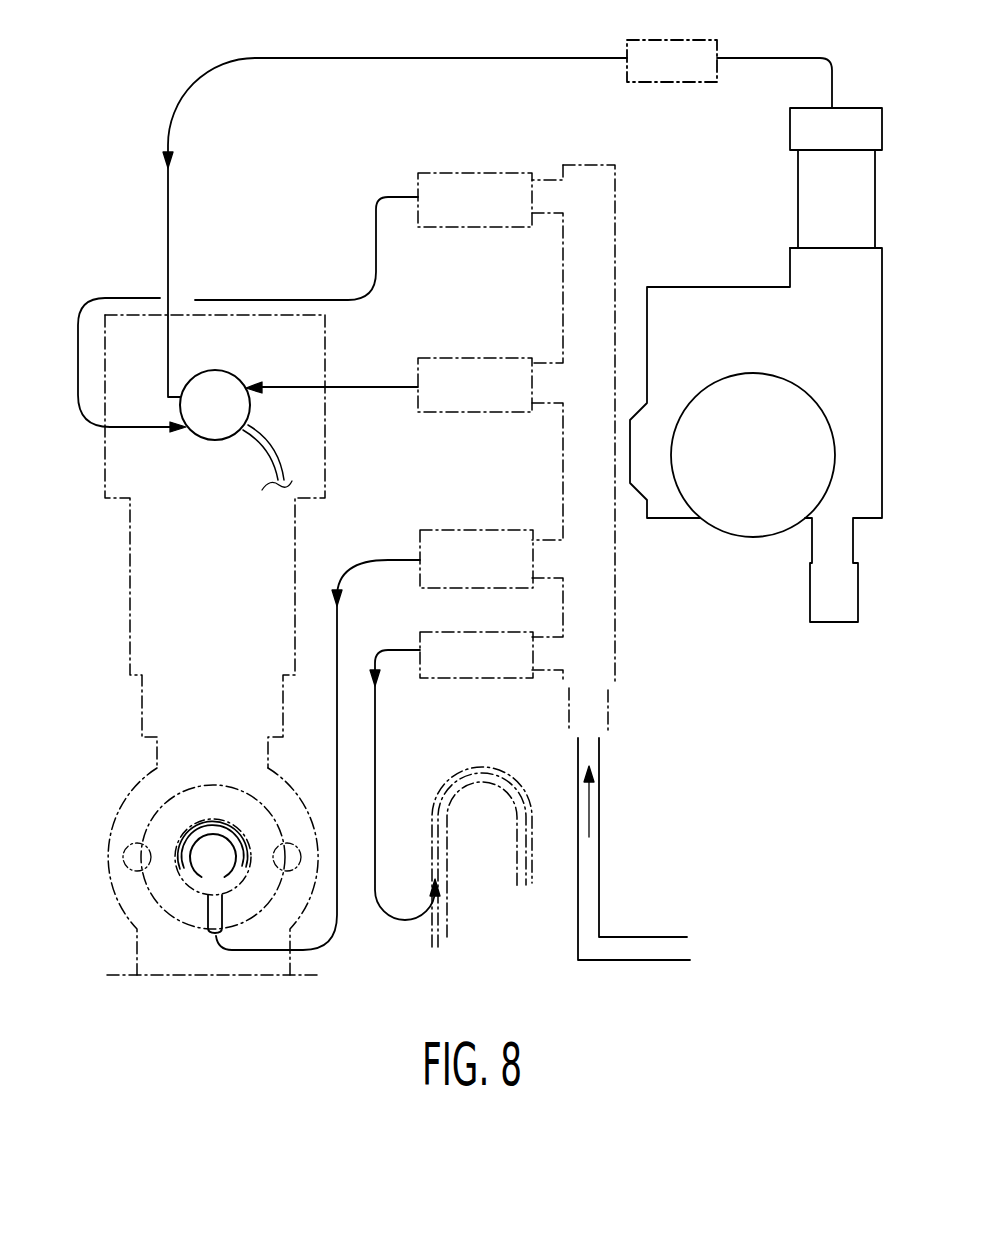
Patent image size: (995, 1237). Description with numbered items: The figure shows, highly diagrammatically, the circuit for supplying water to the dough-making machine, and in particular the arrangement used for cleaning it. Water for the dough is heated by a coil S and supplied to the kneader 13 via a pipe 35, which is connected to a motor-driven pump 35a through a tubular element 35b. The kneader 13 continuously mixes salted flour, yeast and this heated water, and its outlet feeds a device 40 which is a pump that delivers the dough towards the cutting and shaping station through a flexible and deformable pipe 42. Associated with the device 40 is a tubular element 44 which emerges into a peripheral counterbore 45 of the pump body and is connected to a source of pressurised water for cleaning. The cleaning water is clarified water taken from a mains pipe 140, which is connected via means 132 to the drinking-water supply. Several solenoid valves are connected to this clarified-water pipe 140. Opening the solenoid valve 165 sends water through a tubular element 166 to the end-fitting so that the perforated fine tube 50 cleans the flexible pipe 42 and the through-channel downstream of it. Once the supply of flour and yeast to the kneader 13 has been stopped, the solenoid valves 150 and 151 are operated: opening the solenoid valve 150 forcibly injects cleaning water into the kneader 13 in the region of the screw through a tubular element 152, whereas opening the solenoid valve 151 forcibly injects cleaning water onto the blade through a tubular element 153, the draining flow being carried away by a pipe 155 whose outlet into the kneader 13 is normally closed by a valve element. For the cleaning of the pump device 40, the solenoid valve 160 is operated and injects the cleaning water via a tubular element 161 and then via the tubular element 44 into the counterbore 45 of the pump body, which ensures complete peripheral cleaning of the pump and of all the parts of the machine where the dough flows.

The coil S is at (693, 48).
The pipe 35 is at (167, 208).
The motor-driven pump 35a is at (766, 520).
The tubular element 35b is at (818, 33).
The kneader 13 is at (229, 343).
The solenoid valve 150 is at (503, 337).
The solenoid valve 151 is at (490, 152).
The tubular element 152 is at (281, 385).
The tubular element 153 is at (100, 427).
The pipe 155 is at (260, 445).
The solenoid valve 160 is at (462, 572).
The tubular element 161 is at (386, 560).
The solenoid valve 165 is at (447, 665).
The tubular element 166 is at (376, 774).
The device for feeding the dough 40 is at (172, 870).
The flexible and deformable pipe 42 is at (518, 870).
The tubular element 44 is at (202, 912).
The peripheral counterbore 45 is at (240, 872).
The perforated fine tube 50 is at (502, 782).
The mains pipe 140 is at (632, 888).
The means connecting to the drinking-water supply 132 is at (640, 963).